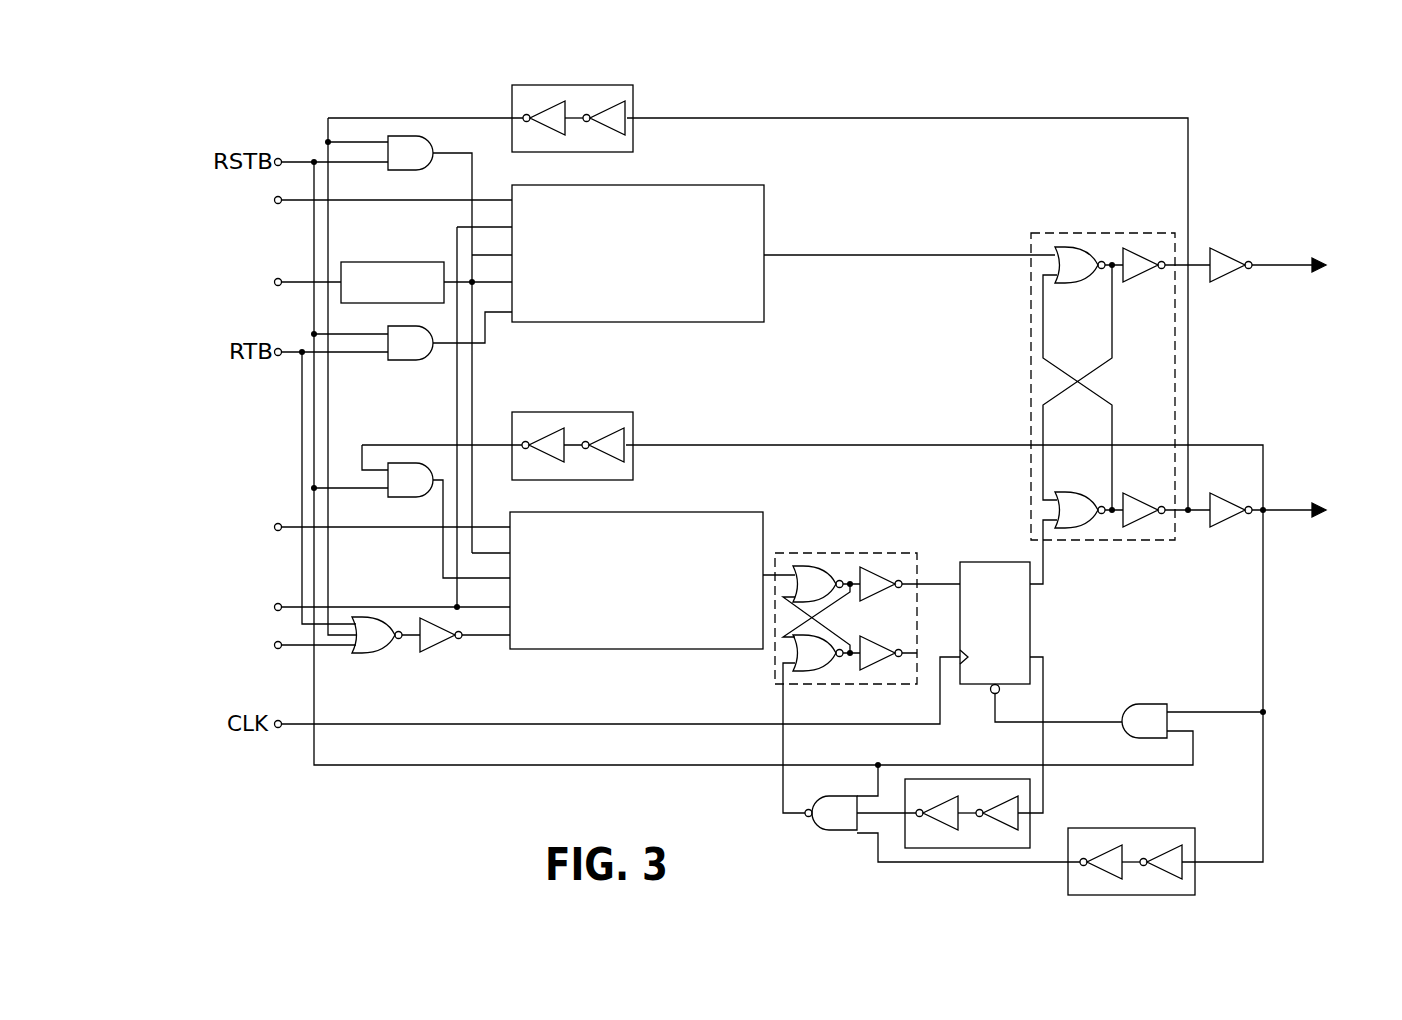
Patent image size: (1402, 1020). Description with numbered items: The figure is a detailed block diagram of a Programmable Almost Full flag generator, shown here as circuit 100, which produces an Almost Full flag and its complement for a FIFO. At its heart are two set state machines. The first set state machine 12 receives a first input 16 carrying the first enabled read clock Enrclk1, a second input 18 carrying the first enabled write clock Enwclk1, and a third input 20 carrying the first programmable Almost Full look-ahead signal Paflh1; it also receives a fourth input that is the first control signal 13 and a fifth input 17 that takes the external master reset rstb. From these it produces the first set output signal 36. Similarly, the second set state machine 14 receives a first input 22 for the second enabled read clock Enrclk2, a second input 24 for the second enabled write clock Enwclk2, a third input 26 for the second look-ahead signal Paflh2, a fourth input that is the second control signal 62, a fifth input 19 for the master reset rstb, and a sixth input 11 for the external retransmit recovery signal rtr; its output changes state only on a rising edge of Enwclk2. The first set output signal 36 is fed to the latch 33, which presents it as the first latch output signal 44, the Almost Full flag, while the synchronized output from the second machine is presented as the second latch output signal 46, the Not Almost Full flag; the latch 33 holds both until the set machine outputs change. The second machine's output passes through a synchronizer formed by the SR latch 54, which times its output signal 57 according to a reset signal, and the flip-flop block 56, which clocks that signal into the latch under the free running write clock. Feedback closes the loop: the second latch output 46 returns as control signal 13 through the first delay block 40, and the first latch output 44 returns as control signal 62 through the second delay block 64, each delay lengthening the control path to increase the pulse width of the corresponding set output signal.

The flag generation circuit 100 is at (314, 58).
The first delay block 40 is at (632, 85).
The first set state machine 12 is at (746, 185).
The third input 20 is at (186, 197).
The second input 18 is at (511, 226).
The fifth input 17 is at (511, 253).
The first input 16 is at (163, 280).
The first control signal 13 is at (511, 308).
The first set output signal 36 is at (798, 254).
The latch 33 is at (1041, 234).
The first latch output signal 44 is at (1307, 264).
The second latch output signal 46 is at (1304, 509).
The second set state machine 14 is at (744, 512).
The third input 26 is at (183, 524).
The second input 24 is at (161, 604).
The fifth input 19 is at (509, 576).
The first input 22 is at (509, 603).
The second control signal 62 is at (509, 631).
The SR latch 54 is at (906, 552).
The flip-flop block 56 is at (978, 561).
The second set machine output signal 57 is at (923, 583).
The second delay block 64 is at (1180, 828).
The sixth input 11 is at (226, 650).